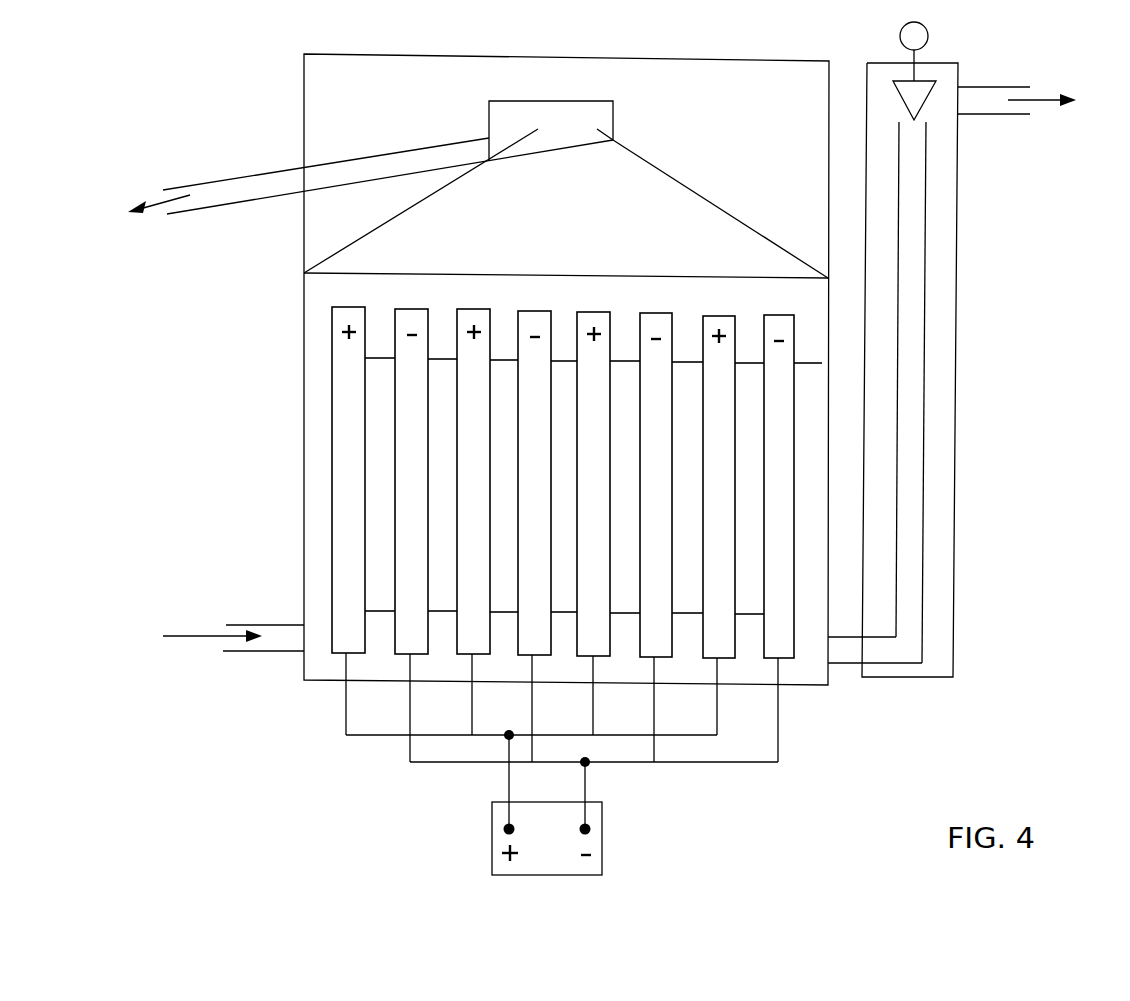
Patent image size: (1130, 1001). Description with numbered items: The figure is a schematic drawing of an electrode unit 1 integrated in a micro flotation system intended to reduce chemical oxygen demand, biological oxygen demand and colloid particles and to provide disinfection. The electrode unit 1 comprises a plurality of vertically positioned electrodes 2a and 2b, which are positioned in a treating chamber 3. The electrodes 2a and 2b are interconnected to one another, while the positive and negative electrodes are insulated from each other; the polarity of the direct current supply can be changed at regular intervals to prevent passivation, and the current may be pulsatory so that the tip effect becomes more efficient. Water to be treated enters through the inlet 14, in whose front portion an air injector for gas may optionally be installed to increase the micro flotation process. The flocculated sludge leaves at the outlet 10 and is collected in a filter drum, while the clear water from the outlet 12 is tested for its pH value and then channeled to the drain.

The electrode unit 1 is at (600, 835).
The vertically positioned electrodes 2a is at (765, 763).
The vertically positioned electrodes 2b is at (378, 735).
The treating chamber 3 is at (667, 59).
The outlet 10 is at (206, 188).
The outlet 12 is at (1035, 134).
The inlet 14 is at (223, 658).